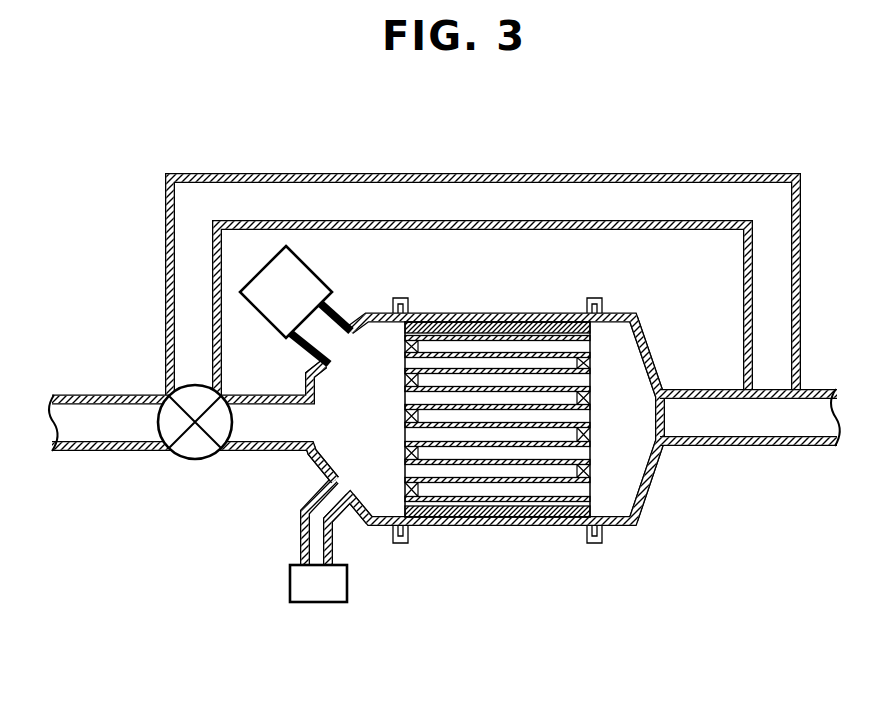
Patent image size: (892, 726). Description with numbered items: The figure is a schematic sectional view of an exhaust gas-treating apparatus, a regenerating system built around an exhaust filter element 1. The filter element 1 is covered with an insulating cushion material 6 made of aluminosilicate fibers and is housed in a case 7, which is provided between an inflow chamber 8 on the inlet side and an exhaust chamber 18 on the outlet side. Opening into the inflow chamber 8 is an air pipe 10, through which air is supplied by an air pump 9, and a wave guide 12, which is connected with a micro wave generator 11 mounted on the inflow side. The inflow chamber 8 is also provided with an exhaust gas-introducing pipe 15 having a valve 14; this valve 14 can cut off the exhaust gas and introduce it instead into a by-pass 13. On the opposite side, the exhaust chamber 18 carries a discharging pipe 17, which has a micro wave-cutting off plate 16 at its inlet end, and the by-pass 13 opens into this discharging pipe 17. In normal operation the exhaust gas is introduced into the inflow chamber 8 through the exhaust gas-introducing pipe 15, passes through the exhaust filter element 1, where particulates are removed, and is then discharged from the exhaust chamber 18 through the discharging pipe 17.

The exhaust filter element 1 is at (516, 492).
The insulating cushion material 6 is at (574, 524).
The case 7 is at (453, 524).
The inflow chamber 8 is at (370, 512).
The air pump 9 is at (313, 594).
The air pipe 10 is at (305, 532).
The micro wave generator 11 is at (287, 262).
The wave guide 12 is at (336, 328).
The by-pass 13 is at (594, 190).
The valve 14 is at (183, 454).
The exhaust gas-introducing pipe 15 is at (110, 397).
The micro wave-cutting off plate 16 is at (676, 428).
The discharging pipe 17 is at (753, 434).
The exhaust chamber 18 is at (623, 508).